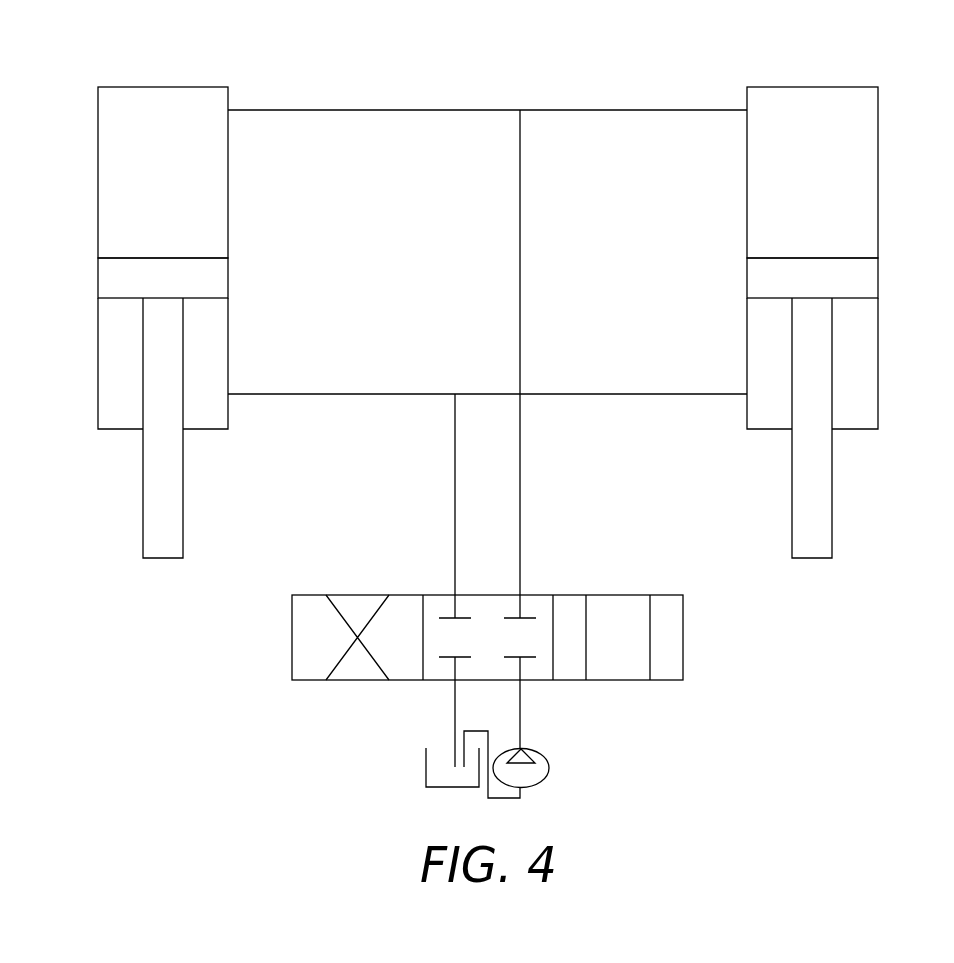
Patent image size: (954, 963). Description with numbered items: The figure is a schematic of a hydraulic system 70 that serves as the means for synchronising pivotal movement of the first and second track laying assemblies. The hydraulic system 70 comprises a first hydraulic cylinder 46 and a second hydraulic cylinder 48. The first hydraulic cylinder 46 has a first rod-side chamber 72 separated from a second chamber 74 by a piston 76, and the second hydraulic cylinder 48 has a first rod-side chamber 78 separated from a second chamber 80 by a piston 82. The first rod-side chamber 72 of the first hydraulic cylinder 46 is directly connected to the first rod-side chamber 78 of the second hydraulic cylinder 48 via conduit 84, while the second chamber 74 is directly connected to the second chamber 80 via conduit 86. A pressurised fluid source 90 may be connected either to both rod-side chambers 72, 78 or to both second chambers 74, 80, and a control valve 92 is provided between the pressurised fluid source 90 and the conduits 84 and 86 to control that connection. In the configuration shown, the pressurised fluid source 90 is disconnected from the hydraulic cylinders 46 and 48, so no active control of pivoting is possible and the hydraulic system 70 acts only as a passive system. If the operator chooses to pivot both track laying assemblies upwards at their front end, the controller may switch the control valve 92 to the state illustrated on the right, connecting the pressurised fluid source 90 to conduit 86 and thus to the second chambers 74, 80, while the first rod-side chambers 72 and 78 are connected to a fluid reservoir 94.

The hydraulic system 70 is at (58, 23).
The second hydraulic cylinder 48 is at (97, 153).
The second chamber 80 is at (160, 96).
The piston 82 is at (107, 277).
The first rod-side chamber 78 is at (107, 368).
The first hydraulic cylinder 46 is at (878, 155).
The second chamber 74 is at (810, 96).
The piston 76 is at (868, 280).
The first rod-side chamber 72 is at (868, 371).
The conduit 86 is at (383, 108).
The conduit 84 is at (645, 396).
The control valve 92 is at (683, 610).
The fluid reservoir 94 is at (426, 762).
The pressurised fluid source 90 is at (549, 768).